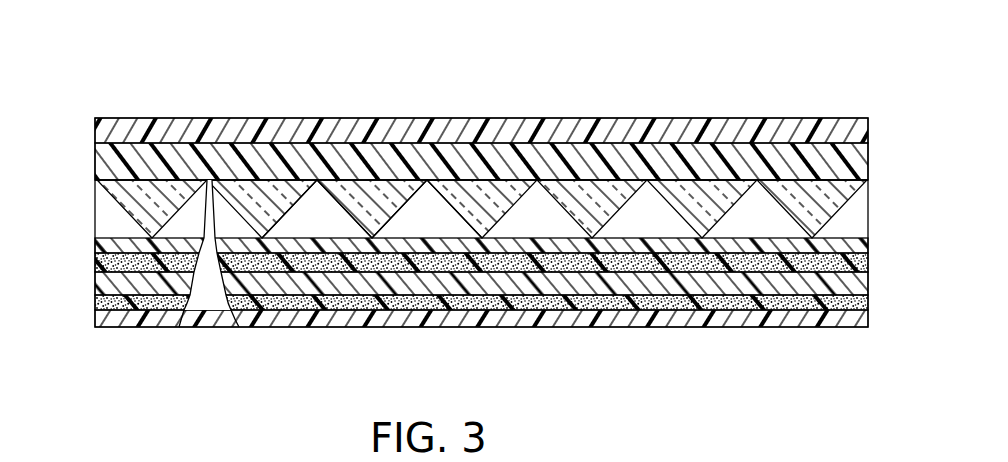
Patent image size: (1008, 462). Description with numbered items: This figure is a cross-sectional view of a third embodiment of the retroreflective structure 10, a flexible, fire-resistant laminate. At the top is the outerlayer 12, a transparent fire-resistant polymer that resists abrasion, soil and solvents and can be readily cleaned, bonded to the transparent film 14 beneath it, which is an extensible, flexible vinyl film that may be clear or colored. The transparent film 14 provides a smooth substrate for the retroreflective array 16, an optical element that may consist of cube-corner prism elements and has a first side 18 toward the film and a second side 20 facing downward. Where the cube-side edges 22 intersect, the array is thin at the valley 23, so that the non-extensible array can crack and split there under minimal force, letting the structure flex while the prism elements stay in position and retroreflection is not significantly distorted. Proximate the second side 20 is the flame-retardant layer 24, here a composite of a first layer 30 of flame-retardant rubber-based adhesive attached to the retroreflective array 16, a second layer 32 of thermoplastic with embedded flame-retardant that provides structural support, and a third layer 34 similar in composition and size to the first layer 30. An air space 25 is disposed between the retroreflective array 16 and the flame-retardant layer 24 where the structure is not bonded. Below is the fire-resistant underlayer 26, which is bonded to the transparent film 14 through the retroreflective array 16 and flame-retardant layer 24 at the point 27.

The retroreflective structure 10 is at (821, 63).
The outerlayer 12 is at (647, 118).
The transparent film 14 is at (585, 158).
The retroreflective array 16 is at (713, 200).
The first side 18 is at (248, 181).
The second side 20 is at (352, 198).
The cube-side edges 22 is at (572, 216).
The valley 23 is at (428, 182).
The flame-retardant layer 24 is at (843, 238).
The air space 25 is at (326, 222).
The underlayer 26 is at (437, 327).
The point 27 is at (207, 180).
The first layer 30 is at (640, 266).
The second layer 32 is at (720, 284).
The third layer 34 is at (787, 299).